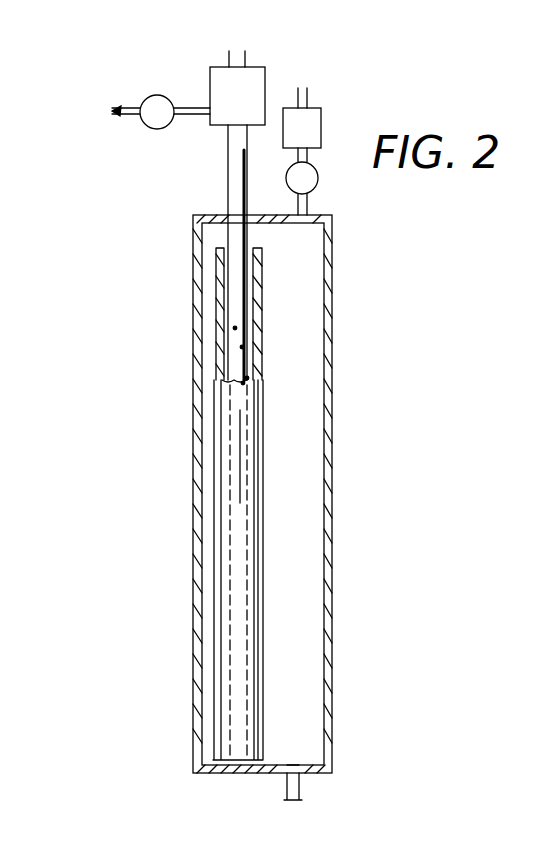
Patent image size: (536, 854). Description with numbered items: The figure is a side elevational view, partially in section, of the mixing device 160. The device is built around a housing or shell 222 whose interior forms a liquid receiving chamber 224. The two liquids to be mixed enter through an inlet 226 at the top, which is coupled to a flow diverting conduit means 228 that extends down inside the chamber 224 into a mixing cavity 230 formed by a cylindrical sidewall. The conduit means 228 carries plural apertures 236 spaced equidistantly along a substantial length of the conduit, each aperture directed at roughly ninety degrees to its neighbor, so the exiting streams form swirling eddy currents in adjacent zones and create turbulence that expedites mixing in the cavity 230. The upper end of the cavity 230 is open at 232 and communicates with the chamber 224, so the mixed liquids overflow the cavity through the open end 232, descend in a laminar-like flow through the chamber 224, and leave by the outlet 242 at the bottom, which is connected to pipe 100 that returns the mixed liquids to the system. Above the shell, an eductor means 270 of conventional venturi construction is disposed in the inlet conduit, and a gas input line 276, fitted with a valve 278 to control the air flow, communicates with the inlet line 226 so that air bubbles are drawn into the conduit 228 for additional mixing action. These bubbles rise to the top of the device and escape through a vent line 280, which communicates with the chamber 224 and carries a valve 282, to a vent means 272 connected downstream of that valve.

The pipe 100 is at (243, 58).
The mixing device 160 is at (304, 494).
The housing or shell 222 is at (330, 290).
The liquid receiving chamber 224 is at (305, 440).
The inlet 226 is at (228, 186).
The flow diverting conduit means 228 is at (237, 282).
The mixing cavity 230 is at (219, 365).
The open upper end 232 is at (248, 245).
The apertures 236 is at (242, 347).
The outlet 242 is at (292, 768).
The eductor means 270 is at (215, 115).
The vent means 272 is at (310, 121).
The gas input line 276 is at (133, 108).
The valve 278 is at (183, 70).
The vent line 280 is at (307, 203).
The valve 282 is at (318, 170).